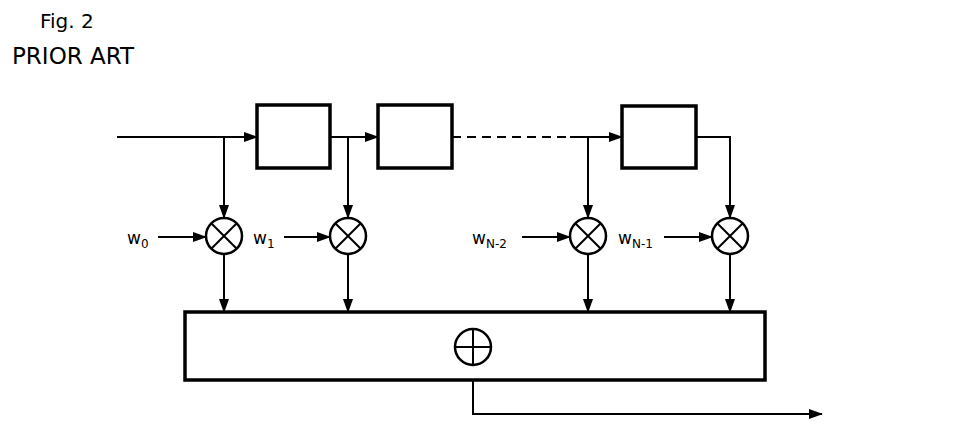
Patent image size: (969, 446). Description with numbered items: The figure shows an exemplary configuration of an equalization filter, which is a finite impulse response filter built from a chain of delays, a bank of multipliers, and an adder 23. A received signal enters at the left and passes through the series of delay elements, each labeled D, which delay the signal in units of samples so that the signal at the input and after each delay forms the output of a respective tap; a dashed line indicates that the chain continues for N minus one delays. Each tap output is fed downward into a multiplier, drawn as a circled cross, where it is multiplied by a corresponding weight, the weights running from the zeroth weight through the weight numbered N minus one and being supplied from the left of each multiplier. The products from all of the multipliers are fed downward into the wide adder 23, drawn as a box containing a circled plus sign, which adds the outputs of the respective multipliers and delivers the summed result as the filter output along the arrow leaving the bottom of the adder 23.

The adder 23 is at (767, 341).